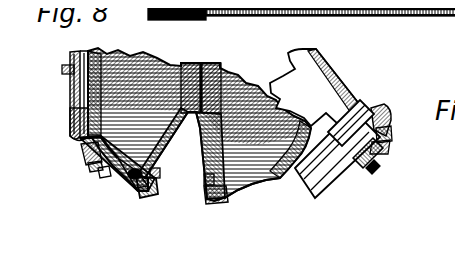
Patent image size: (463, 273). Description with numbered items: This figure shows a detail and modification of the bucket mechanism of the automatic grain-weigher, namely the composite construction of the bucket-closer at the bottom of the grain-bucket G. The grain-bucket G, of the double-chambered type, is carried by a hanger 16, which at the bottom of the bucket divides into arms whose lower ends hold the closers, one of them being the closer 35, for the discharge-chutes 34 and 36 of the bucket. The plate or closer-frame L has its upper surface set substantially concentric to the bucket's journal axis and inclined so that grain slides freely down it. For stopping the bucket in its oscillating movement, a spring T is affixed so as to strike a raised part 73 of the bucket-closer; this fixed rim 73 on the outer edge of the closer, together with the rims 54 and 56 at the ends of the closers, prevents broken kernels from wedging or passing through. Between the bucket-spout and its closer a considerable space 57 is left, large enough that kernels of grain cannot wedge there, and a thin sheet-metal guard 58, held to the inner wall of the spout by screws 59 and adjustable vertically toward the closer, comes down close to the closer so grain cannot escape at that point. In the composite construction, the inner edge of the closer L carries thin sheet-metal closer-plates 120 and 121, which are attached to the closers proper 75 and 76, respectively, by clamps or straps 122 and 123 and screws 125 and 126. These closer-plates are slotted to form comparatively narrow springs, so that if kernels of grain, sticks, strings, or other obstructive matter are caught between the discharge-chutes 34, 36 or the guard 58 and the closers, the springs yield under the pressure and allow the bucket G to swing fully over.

The grain-bucket G is at (138, 57).
The spring-stop T is at (72, 86).
The closer L is at (73, 130).
The hanger 16 is at (318, 87).
The discharge-chute 34 is at (121, 152).
The closer 35 is at (382, 137).
The discharge-chute 36 is at (240, 162).
The rim 54 is at (70, 108).
The rim 56 is at (397, 127).
The space 57 is at (80, 158).
The sheet-metal guard 58 is at (200, 170).
The screw 59 is at (196, 178).
The fixed rim 73 is at (70, 115).
The closer proper 75 is at (72, 125).
The closer proper 76 is at (378, 108).
The closer-plate 120 is at (135, 182).
The closer-plate 121 is at (317, 175).
The clamp or strap 122 is at (88, 143).
The clamp or strap 123 is at (383, 155).
The screw 125 is at (90, 165).
The screw 126 is at (366, 163).